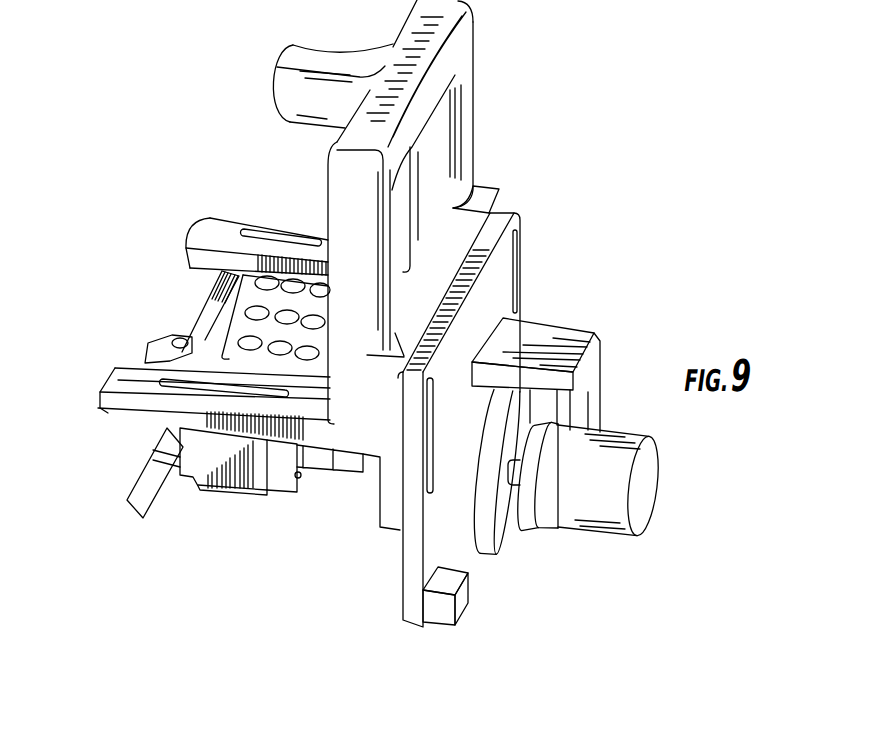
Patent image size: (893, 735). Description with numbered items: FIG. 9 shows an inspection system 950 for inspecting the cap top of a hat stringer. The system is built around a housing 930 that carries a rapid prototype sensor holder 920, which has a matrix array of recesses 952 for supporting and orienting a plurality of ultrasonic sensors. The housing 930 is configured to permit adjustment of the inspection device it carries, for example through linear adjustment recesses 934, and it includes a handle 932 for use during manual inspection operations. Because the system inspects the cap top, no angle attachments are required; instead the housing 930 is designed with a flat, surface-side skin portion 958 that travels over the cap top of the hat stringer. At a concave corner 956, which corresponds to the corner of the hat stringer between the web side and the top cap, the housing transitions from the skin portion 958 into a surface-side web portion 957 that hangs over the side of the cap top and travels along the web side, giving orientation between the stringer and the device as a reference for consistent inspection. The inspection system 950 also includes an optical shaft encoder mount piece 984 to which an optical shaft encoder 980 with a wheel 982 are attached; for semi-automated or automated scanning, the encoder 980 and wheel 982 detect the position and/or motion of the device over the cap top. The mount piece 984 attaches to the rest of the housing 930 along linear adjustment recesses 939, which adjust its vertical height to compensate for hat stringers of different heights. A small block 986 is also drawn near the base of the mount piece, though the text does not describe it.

The inspection system 950 is at (690, 82).
The housing 930 is at (478, 145).
The handle 932 is at (356, 172).
The matrix array of recesses 952 is at (220, 328).
The rapid prototype sensor holder 920 is at (232, 312).
The linear adjustment recesses 934 is at (188, 388).
The surface-side web portion 957 is at (160, 514).
The concave corner 956 is at (189, 490).
The surface-side skin portion 958 is at (238, 498).
The optical shaft encoder mount piece 984 is at (477, 320).
The linear adjustment recesses 939 is at (433, 416).
The wheel 982 is at (508, 530).
The optical shaft encoder 980 is at (617, 505).
The stop block 986 is at (437, 609).